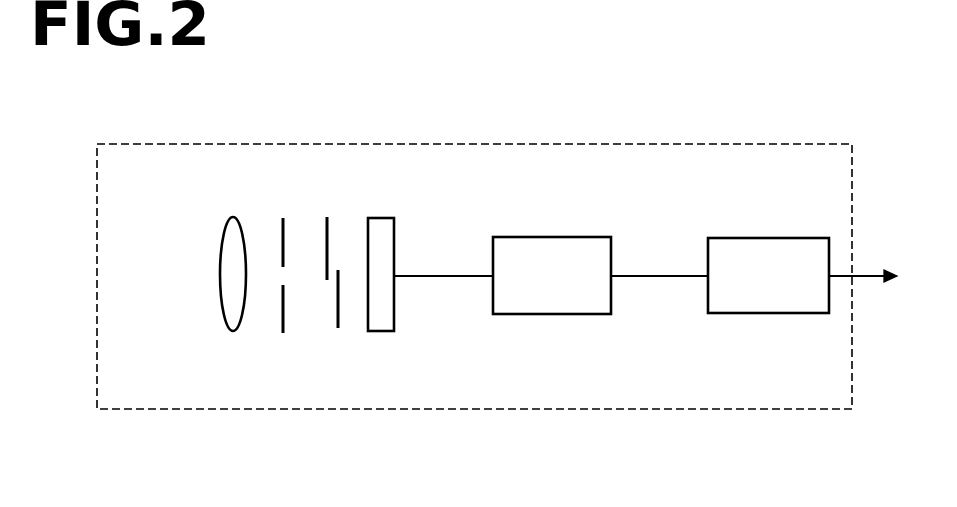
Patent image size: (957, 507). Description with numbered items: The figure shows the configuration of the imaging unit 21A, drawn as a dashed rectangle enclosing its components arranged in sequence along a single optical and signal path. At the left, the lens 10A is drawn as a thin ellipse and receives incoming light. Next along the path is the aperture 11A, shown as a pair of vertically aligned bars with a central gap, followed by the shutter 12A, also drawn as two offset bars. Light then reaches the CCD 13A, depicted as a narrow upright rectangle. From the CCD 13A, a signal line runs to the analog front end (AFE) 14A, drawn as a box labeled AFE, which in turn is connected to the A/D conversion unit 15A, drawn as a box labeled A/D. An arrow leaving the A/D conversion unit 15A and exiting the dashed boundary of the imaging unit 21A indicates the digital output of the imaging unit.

The lens 10A is at (233, 217).
The aperture 11A is at (283, 333).
The shutter 12A is at (327, 217).
The CCD 13A is at (380, 331).
The analog front end (AFE) 14A is at (540, 314).
The A/D conversion unit 15A is at (755, 313).
The imaging unit 21A is at (795, 110).